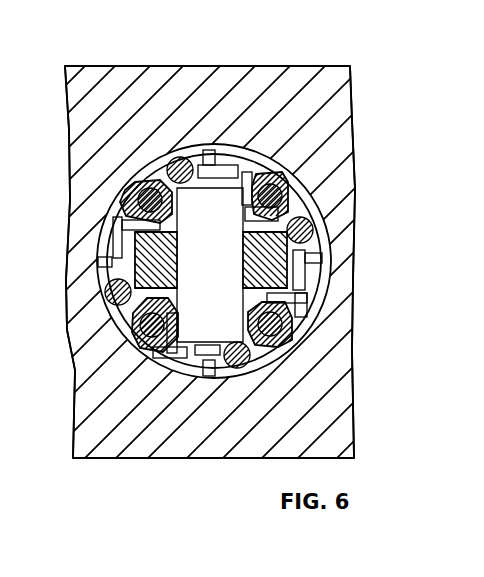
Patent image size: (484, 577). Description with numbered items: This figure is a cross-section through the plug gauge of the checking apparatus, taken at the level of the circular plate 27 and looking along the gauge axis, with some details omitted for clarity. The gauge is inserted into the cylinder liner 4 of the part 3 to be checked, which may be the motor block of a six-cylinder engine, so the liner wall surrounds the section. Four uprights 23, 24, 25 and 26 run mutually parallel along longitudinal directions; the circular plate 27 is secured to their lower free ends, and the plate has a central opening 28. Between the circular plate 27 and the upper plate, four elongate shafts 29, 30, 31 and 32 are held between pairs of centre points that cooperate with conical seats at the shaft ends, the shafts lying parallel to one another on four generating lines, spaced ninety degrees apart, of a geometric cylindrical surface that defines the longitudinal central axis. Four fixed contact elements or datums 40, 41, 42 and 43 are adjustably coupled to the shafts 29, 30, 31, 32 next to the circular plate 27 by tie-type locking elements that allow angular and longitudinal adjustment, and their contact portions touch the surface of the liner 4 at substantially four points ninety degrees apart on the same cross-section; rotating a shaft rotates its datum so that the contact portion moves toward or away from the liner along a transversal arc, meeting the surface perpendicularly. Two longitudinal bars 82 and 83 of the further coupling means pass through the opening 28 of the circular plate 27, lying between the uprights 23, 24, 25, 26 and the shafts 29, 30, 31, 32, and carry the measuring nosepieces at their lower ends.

The part to be checked 3 is at (122, 84).
The cylinder liner 4 is at (288, 145).
The upright 23 is at (294, 336).
The upright 24 is at (107, 303).
The upright 25 is at (242, 165).
The upright 26 is at (312, 190).
The circular plate 27 is at (112, 236).
The opening 28 is at (200, 372).
The shaft 29 is at (308, 300).
The shaft 30 is at (77, 360).
The shaft 31 is at (228, 146).
The shaft 32 is at (292, 178).
The fixed contact element or datum 40 is at (306, 258).
The fixed contact element or datum 41 is at (205, 362).
The fixed contact element or datum 42 is at (112, 261).
The fixed contact element or datum 43 is at (272, 150).
The longitudinal bar 82 is at (323, 250).
The longitudinal bar 83 is at (99, 265).